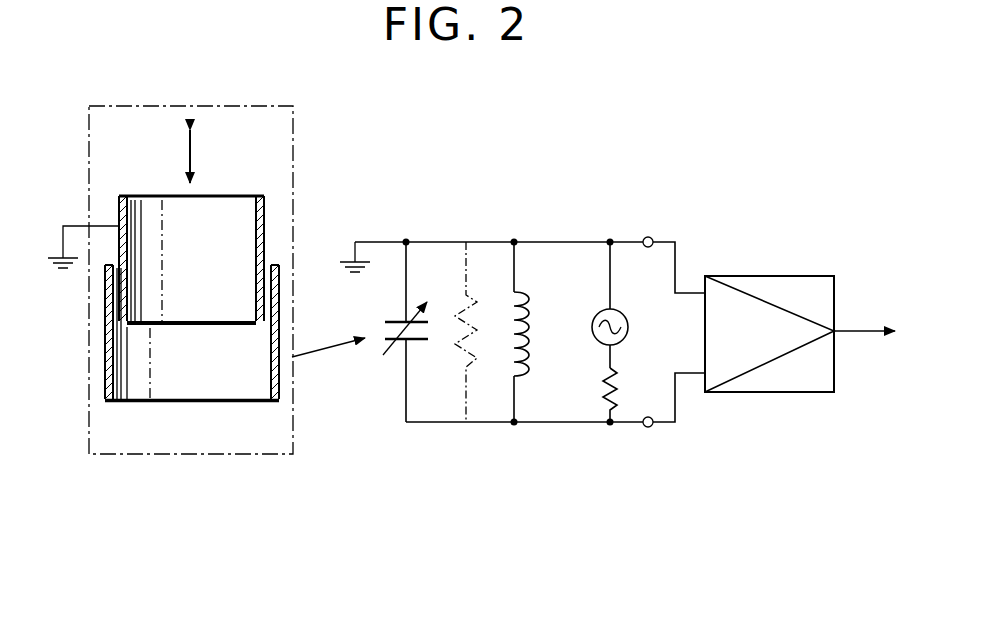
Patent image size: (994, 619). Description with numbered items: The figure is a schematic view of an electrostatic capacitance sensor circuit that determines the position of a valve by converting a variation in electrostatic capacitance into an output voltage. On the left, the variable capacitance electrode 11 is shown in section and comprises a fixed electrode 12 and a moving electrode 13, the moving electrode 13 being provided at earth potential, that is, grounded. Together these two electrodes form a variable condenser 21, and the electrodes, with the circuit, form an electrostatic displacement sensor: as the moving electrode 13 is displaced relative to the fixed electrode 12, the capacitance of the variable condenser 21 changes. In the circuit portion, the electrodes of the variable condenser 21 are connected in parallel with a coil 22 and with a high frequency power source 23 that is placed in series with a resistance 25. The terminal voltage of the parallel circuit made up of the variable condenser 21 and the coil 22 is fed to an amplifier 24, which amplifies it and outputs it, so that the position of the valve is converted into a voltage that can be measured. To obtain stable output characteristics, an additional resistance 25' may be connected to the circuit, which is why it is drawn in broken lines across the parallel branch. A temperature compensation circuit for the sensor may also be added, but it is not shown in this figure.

The variable capacitance electrode 11 is at (101, 349).
The fixed electrode 12 is at (387, 343).
The moving electrode 13 is at (265, 235).
The variable condenser 21 is at (413, 347).
The coil 22 is at (518, 295).
The high frequency power source 23 is at (615, 308).
The amplifier 24 is at (767, 393).
The resistance 25 is at (594, 426).
The resistance 25' is at (481, 301).